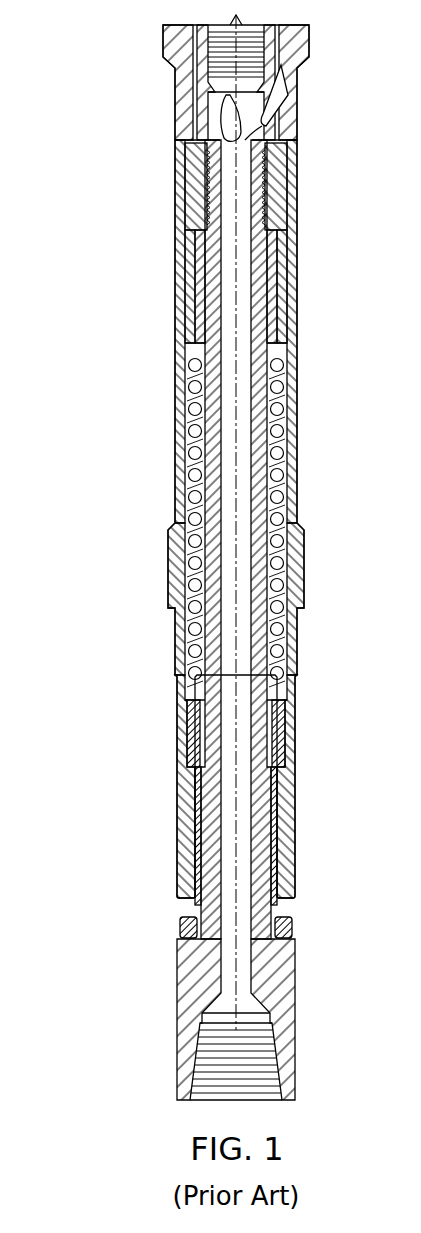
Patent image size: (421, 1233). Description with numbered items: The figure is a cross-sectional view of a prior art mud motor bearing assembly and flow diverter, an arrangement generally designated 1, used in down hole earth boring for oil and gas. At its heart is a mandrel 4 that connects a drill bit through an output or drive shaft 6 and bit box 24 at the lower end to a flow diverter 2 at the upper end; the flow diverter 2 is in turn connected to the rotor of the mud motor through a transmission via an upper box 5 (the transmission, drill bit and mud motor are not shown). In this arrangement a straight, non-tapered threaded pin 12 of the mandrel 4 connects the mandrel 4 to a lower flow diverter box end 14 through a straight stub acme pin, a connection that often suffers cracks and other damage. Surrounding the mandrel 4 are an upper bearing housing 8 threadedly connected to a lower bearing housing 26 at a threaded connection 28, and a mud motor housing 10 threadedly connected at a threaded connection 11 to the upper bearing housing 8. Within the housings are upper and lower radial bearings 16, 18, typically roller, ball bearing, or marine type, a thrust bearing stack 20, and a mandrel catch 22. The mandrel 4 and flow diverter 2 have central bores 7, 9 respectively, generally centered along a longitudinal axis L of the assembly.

The prior art mud motor bearing assembly and flow diverter arrangement 1 is at (62, 82).
The flow diverter 2 is at (273, 47).
The mandrel 4 is at (298, 313).
The upper box 5 is at (206, 47).
The output or drive shaft 6 is at (190, 970).
The central bore of the mandrel 7 is at (226, 463).
The upper bearing housing 8 is at (292, 553).
The central bore of the flow diverter 9 is at (226, 110).
The mud motor housing 10 is at (295, 95).
The threaded connection 11 is at (190, 185).
The straight, non-tapered threaded pin 12 is at (273, 205).
The lower flow diverter box end 14 is at (293, 156).
The upper radial bearing 16 is at (195, 278).
The lower radial bearing 18 is at (190, 836).
The thrust bearing stack 20 is at (190, 553).
The mandrel catch 22 is at (187, 722).
The bit box 24 is at (282, 1067).
The lower bearing housing 26 is at (287, 830).
The threaded connection 28 is at (295, 738).
The longitudinal axis L is at (236, 437).